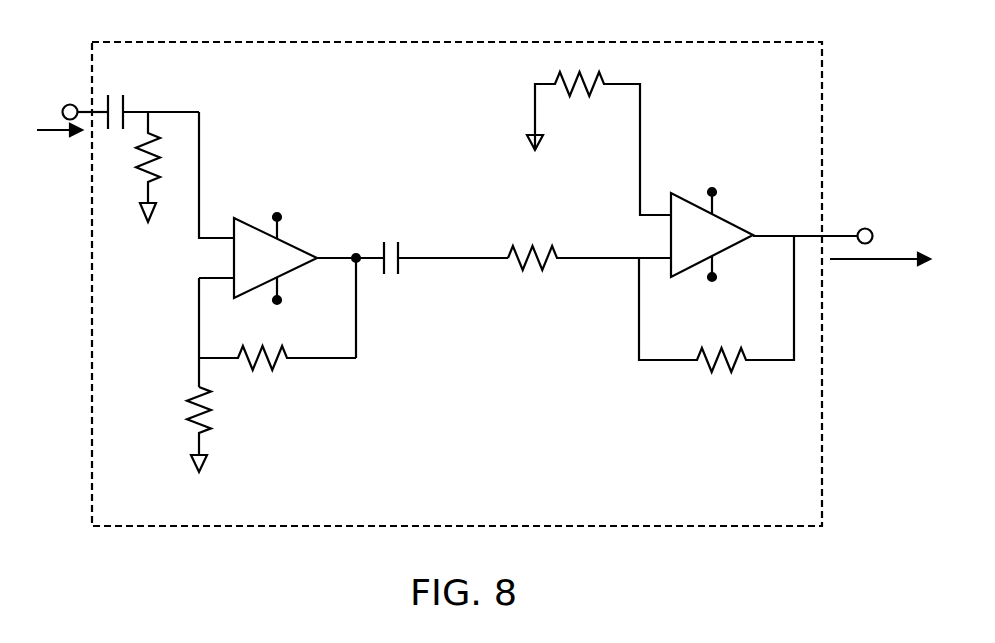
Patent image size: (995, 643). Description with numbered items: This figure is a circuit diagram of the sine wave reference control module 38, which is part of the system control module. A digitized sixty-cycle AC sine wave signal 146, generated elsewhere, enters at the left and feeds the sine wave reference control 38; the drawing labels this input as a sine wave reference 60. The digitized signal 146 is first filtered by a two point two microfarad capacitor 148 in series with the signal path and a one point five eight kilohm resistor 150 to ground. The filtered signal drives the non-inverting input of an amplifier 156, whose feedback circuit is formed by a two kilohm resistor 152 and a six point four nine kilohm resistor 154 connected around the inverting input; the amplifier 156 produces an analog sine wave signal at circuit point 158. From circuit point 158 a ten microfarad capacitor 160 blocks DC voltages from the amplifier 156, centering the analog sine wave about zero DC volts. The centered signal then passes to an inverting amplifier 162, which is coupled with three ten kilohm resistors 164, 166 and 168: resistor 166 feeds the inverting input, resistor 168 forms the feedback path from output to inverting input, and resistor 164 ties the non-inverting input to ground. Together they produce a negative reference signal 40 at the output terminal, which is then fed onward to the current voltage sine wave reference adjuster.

The sine wave reference control module 38 is at (822, 497).
The negative reference signal 40 is at (836, 233).
The sine wave reference input 60 is at (67, 180).
The digitized 60 cycle AC sine wave signal 146 is at (44, 127).
The 2.2 uf capacitor 148 is at (117, 99).
The 1.58K resistor 150 is at (160, 168).
The 2K resistor 152 is at (190, 408).
The 6.49K resistor 154 is at (265, 368).
The amplifier 156 is at (242, 218).
The circuit point 158 is at (356, 253).
The 10 uf capacitor 160 is at (393, 268).
The inverting amplifier 162 is at (685, 197).
The 10K resistor 164 is at (570, 94).
The 10K resistor 166 is at (523, 266).
The 10K resistor 168 is at (722, 368).